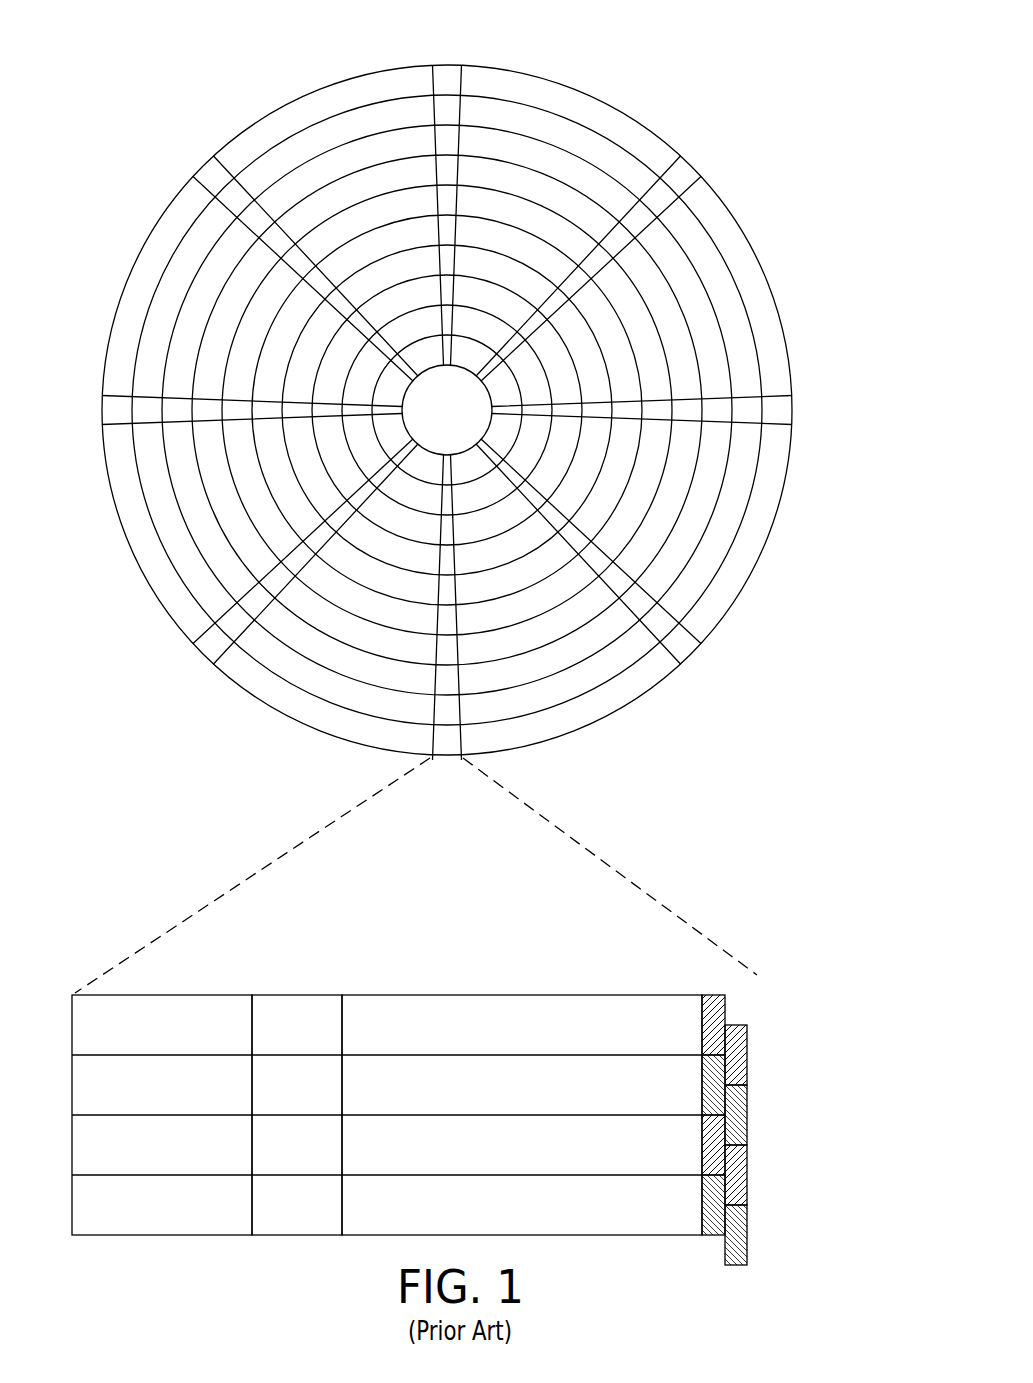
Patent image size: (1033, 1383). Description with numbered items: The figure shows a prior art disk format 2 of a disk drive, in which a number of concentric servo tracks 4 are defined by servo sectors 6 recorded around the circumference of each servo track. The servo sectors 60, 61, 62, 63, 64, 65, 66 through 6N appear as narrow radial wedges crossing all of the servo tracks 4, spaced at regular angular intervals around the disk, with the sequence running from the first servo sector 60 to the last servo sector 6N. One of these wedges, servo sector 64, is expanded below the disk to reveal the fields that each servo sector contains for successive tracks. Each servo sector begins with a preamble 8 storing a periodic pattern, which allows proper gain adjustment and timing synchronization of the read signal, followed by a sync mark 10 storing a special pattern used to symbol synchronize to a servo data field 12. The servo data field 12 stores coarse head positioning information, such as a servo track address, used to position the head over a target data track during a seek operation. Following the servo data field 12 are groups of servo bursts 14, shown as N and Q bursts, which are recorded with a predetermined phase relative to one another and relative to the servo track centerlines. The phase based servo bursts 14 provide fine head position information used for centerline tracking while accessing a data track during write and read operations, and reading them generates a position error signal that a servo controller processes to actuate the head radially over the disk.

The disk format 2 is at (190, 67).
The servo tracks 4 is at (587, 117).
The servo sectors 6 is at (442, 421).
The servo sector 60 is at (447, 77).
The servo sector 61 is at (683, 175).
The servo sector 62 is at (784, 410).
The servo sector 63 is at (686, 652).
The servo sector 64 is at (291, 836).
The servo sector 65 is at (207, 648).
The servo sector 66 is at (110, 410).
The servo sector 6N is at (208, 173).
The preamble 8 is at (170, 995).
The sync mark 10 is at (302, 995).
The servo data field 12 is at (506, 995).
The servo bursts 14 is at (744, 993).